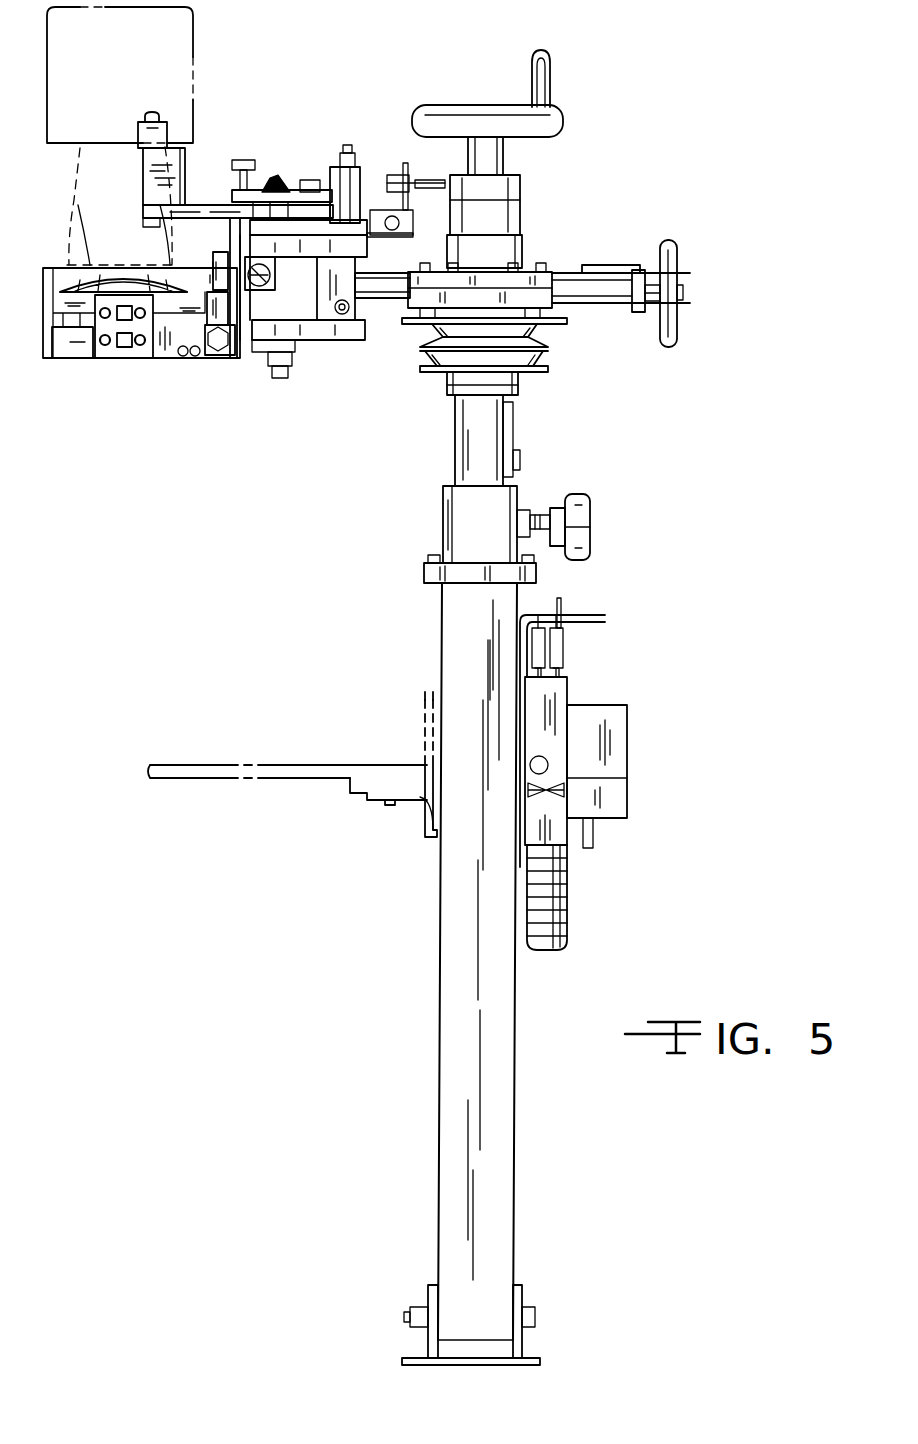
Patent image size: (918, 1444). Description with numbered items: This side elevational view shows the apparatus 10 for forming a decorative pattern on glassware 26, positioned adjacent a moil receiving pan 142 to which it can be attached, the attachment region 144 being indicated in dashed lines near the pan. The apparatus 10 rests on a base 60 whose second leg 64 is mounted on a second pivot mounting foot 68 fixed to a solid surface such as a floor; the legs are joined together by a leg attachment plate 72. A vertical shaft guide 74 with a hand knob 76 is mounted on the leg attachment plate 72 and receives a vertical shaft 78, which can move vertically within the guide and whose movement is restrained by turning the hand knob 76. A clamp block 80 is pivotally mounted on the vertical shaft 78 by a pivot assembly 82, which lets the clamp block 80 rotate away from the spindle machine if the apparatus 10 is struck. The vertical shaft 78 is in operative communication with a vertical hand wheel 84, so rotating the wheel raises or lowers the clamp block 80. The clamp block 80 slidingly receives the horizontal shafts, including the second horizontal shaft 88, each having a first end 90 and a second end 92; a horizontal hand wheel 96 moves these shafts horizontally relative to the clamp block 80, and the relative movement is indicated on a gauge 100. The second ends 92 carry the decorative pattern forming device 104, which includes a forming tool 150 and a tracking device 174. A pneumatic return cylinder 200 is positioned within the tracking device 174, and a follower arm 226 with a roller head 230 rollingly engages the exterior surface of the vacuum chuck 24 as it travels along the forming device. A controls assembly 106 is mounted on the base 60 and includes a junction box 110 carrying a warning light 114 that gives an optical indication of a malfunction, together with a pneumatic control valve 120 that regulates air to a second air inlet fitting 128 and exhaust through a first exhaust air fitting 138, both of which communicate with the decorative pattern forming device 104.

The apparatus 10 is at (668, 150).
The vacuum chuck 24 is at (195, 42).
The glassware 26 is at (72, 212).
The base 60 is at (422, 915).
The second leg 64 is at (510, 1045).
The second pivot mounting foot 68 is at (537, 1340).
The leg attachment plate 72 is at (432, 572).
The vertical shaft guide 74 is at (462, 513).
The hand knob 76 is at (595, 500).
The vertical shaft 78 is at (462, 445).
The clamp block 80 is at (545, 272).
The pivot assembly 82 is at (545, 338).
The vertical hand wheel 84 is at (550, 62).
The second horizontal shaft 88 is at (598, 305).
The first end 90 is at (638, 268).
The second end 92 is at (380, 305).
The horizontal hand wheel 96 is at (680, 255).
The gauge 100 is at (597, 265).
The decorative pattern forming device 104 is at (308, 106).
The controls assembly 106 is at (645, 727).
The junction box 110 is at (620, 760).
The warning light 114 is at (567, 884).
The pneumatic control valve 120 is at (560, 690).
The second air inlet fitting 128 is at (538, 608).
The first exhaust air fitting 138 is at (565, 612).
The moil receiving pan 142 is at (216, 765).
The bracket 144 is at (425, 805).
The forming tool 150 is at (100, 292).
The tracking device 174 is at (295, 190).
The pneumatic return cylinder 200 is at (265, 295).
The follower arm 226 is at (200, 205).
The roller head 230 is at (165, 133).